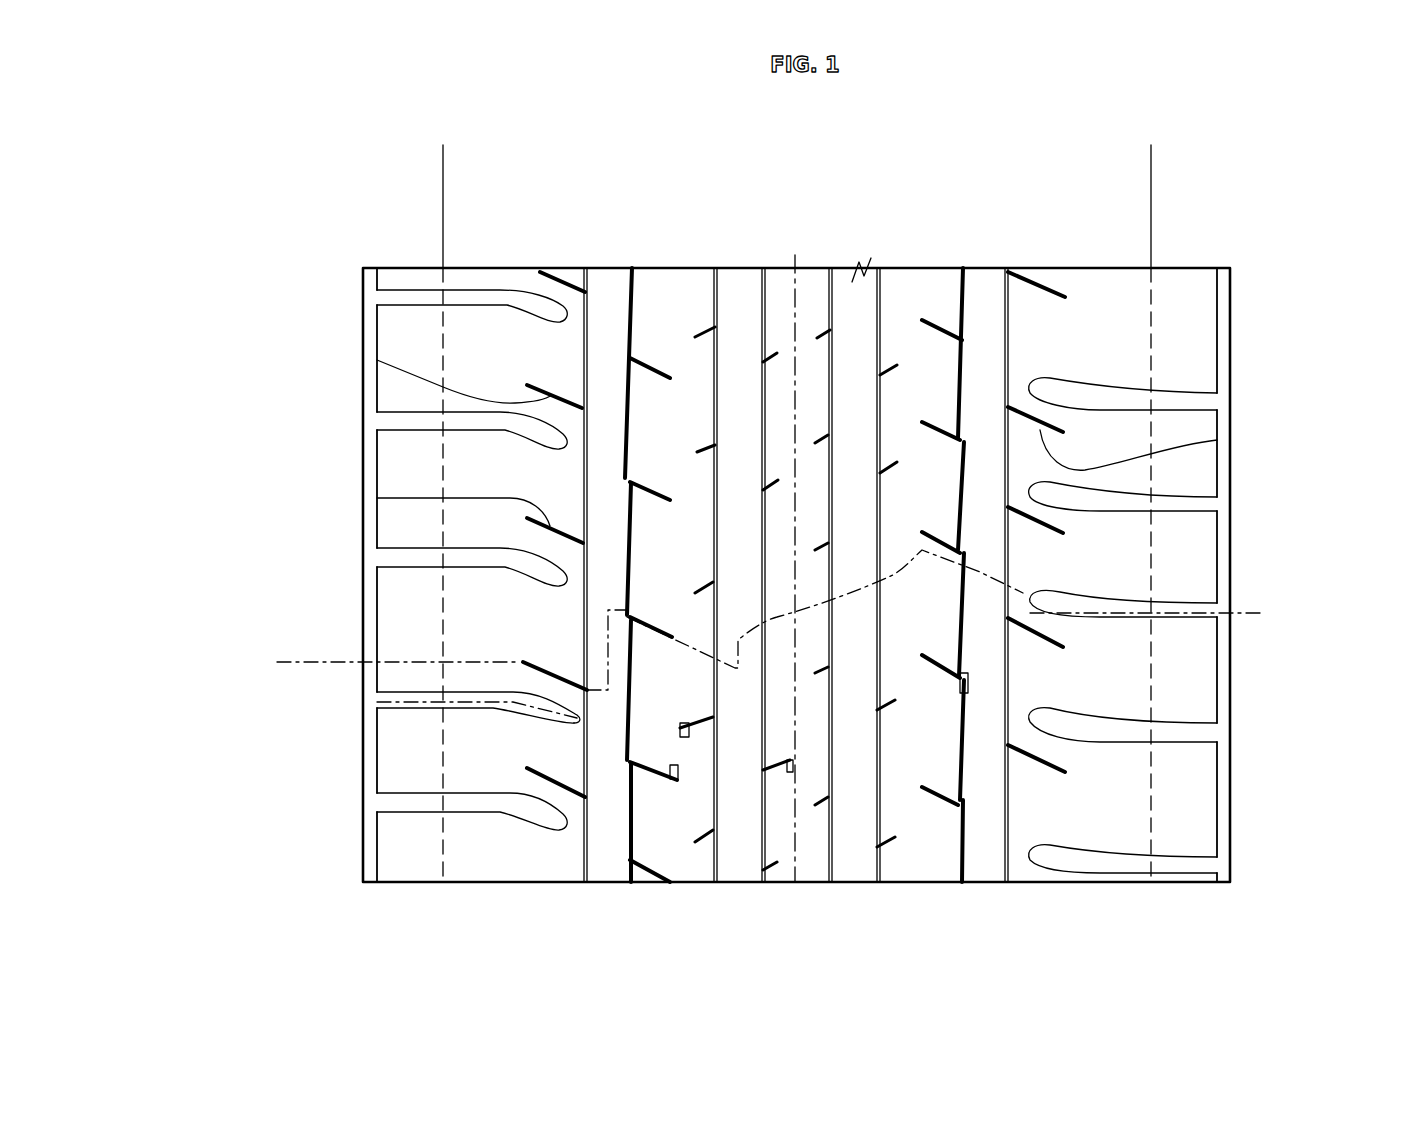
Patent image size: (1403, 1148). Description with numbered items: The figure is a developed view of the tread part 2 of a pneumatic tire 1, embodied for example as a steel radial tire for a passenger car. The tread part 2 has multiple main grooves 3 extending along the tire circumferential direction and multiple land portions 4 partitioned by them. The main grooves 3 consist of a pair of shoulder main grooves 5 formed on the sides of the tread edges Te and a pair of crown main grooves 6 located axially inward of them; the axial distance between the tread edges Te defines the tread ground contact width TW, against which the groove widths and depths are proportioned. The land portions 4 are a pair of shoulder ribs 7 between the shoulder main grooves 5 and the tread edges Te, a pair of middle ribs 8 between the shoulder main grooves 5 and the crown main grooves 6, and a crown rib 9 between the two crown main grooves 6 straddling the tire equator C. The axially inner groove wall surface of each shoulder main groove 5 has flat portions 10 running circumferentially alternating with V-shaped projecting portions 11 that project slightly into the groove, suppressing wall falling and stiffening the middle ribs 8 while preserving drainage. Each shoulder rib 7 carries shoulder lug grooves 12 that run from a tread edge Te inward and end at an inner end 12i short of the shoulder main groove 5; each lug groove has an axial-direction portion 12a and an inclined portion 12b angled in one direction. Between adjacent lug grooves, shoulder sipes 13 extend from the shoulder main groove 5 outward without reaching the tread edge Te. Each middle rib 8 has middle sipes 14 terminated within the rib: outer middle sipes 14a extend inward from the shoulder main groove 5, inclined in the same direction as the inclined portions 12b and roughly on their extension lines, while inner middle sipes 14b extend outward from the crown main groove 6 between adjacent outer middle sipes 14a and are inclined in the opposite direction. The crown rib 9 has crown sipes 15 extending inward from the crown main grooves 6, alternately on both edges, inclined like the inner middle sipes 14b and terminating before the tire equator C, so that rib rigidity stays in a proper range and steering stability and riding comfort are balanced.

The pneumatic tire 1 is at (1207, 197).
The tread part 2 is at (1174, 245).
The main grooves 3 is at (739, 538).
The land portions 4 is at (785, 578).
The shoulder main grooves 5 is at (739, 538).
The crown main grooves 6 is at (730, 317).
The shoulder ribs 7 is at (785, 533).
The middle ribs 8 is at (766, 582).
The crown rib 9 is at (775, 577).
The flat portions 10 is at (585, 575).
The V-shaped projecting portions 11 is at (607, 293).
The shoulder lug grooves 12 is at (785, 581).
The axial-direction portion 12a is at (475, 700).
The inclined portion 12b is at (540, 740).
The tire axial direction inner end 12i is at (1030, 699).
The shoulder sipes 13 is at (377, 360).
The middle sipes 14 is at (766, 641).
The outer middle sipes 14a is at (623, 745).
The inner middle sipes 14b is at (607, 723).
The crown sipes 15 is at (763, 767).
The tread edge Te is at (443, 344).
The tread ground contact width TW is at (1142, 142).
The tire equator C is at (794, 555).